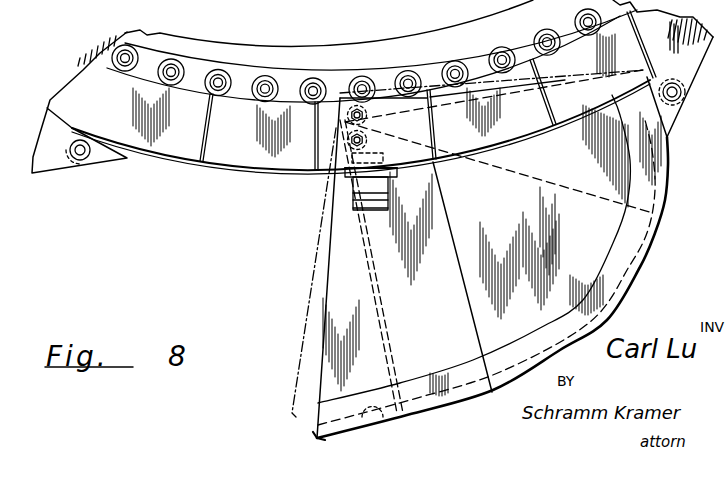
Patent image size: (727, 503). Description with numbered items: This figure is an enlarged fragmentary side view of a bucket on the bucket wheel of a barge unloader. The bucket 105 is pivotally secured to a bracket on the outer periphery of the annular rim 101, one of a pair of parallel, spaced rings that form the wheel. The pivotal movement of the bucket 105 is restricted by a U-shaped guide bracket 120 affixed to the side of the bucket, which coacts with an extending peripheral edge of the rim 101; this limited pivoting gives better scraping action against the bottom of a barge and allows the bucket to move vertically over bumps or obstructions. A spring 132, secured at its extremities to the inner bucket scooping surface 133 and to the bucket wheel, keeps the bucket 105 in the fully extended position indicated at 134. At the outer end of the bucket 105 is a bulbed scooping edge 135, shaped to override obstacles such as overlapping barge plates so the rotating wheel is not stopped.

The annular rim 101 is at (237, 166).
The bucket 105 is at (607, 320).
The U-shaped guide bracket 120 is at (378, 183).
The spring 132 is at (387, 308).
The inner bucket scooping surface 133 is at (364, 428).
The fully extended position 134 is at (302, 429).
The bulbed scooping edge 135 is at (319, 440).